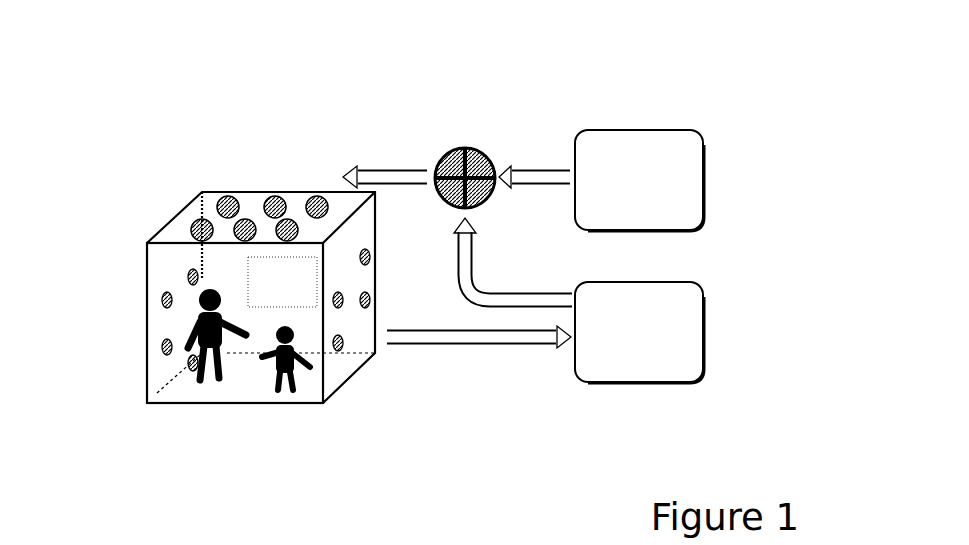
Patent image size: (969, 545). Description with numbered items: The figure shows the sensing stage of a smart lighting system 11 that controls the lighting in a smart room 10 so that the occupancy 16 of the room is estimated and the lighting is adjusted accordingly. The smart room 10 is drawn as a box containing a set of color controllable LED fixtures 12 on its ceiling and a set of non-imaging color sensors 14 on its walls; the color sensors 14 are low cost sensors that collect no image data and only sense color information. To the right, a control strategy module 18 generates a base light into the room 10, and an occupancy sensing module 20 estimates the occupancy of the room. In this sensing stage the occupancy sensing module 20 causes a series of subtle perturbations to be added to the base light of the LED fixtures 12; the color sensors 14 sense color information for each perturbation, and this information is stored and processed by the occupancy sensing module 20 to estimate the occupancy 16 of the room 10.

The smart room 10 is at (148, 323).
The smart lighting system 11 is at (508, 83).
The color controllable LED fixtures 12 is at (180, 212).
The non-imaging color sensors 14 is at (335, 368).
The occupancy 16 is at (283, 373).
The control strategy module 18 is at (688, 200).
The occupancy sensing module 20 is at (690, 350).